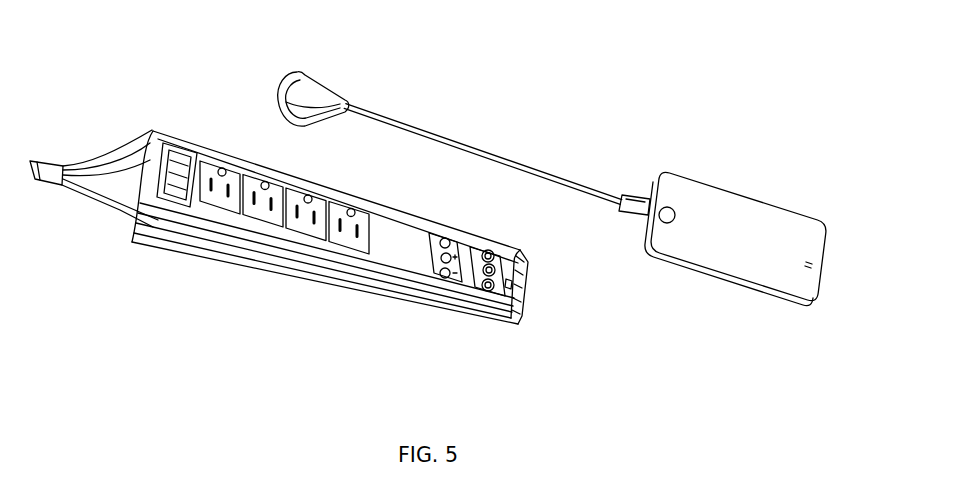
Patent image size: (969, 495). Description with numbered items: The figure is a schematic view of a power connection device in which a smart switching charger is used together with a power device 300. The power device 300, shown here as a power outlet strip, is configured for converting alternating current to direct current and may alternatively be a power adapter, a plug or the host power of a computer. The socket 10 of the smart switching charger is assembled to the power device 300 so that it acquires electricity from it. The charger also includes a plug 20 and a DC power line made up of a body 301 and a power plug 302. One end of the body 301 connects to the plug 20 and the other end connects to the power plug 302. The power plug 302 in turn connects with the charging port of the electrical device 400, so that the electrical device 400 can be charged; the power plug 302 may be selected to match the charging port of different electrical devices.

The power device 300 is at (382, 258).
The socket 10 is at (490, 284).
The plug 20 is at (310, 97).
The body 301 is at (498, 166).
The power plug 302 is at (636, 215).
The electrical device 400 is at (728, 214).